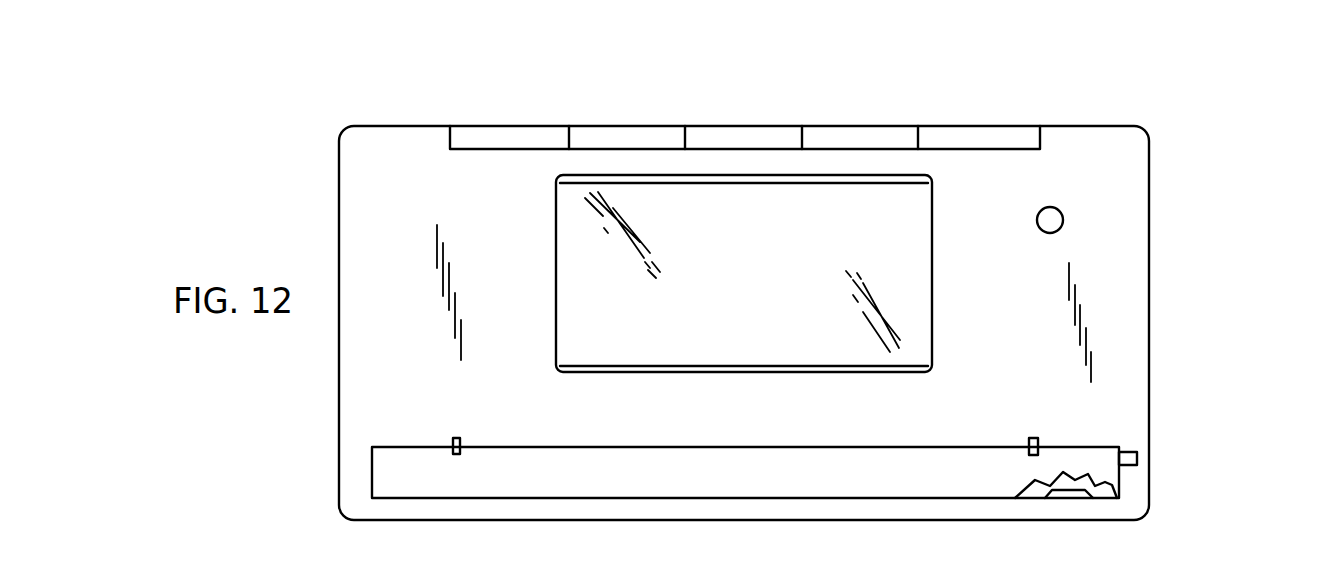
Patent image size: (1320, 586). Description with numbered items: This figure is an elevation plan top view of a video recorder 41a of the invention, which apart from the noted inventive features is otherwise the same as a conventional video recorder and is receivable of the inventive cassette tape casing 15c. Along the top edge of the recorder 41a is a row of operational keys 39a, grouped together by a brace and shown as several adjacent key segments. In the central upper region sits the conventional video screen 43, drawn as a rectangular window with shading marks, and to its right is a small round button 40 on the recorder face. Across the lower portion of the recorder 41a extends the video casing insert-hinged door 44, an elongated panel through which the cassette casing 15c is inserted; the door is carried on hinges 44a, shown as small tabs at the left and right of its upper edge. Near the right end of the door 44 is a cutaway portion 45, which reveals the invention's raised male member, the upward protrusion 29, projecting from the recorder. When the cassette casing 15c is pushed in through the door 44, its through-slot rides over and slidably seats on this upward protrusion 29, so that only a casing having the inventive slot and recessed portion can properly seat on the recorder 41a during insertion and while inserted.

The video recorder 41a is at (1180, 184).
The operational keys 39a is at (960, 133).
The video screen 43 is at (900, 277).
The button 40 is at (1063, 224).
The insert-hinged door 44 is at (993, 483).
The hinges 44a is at (459, 438).
The cassette tape casing 15c is at (1133, 449).
The cutaway portion 45 is at (1107, 492).
The upward protrusion 29 is at (1068, 490).